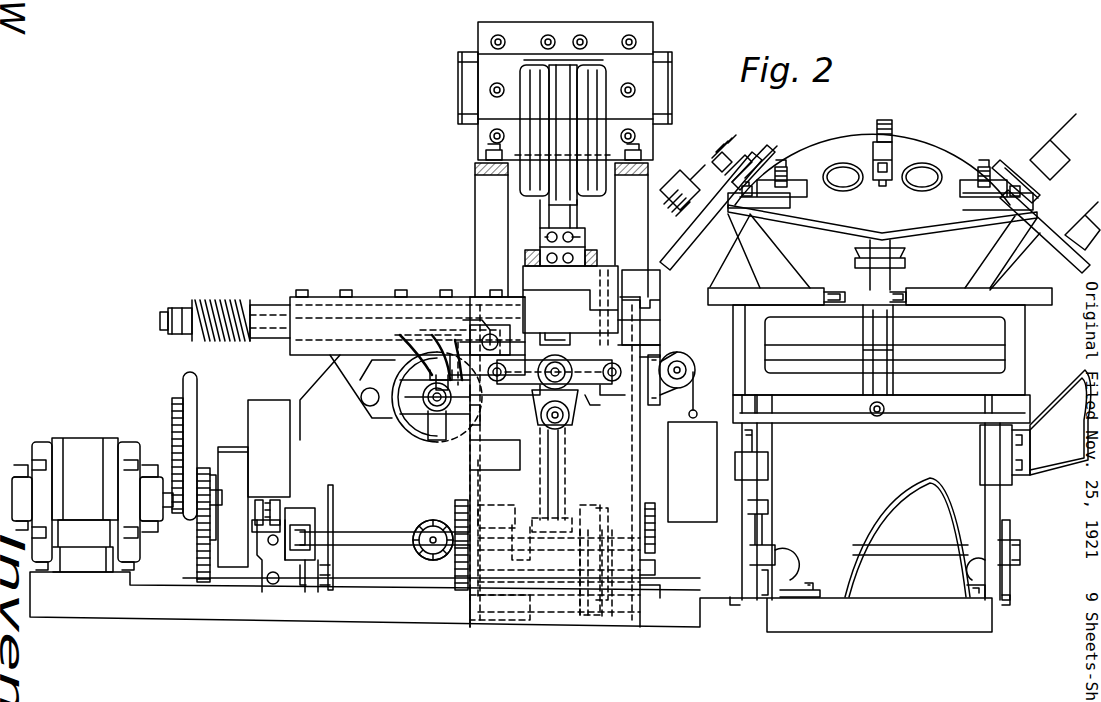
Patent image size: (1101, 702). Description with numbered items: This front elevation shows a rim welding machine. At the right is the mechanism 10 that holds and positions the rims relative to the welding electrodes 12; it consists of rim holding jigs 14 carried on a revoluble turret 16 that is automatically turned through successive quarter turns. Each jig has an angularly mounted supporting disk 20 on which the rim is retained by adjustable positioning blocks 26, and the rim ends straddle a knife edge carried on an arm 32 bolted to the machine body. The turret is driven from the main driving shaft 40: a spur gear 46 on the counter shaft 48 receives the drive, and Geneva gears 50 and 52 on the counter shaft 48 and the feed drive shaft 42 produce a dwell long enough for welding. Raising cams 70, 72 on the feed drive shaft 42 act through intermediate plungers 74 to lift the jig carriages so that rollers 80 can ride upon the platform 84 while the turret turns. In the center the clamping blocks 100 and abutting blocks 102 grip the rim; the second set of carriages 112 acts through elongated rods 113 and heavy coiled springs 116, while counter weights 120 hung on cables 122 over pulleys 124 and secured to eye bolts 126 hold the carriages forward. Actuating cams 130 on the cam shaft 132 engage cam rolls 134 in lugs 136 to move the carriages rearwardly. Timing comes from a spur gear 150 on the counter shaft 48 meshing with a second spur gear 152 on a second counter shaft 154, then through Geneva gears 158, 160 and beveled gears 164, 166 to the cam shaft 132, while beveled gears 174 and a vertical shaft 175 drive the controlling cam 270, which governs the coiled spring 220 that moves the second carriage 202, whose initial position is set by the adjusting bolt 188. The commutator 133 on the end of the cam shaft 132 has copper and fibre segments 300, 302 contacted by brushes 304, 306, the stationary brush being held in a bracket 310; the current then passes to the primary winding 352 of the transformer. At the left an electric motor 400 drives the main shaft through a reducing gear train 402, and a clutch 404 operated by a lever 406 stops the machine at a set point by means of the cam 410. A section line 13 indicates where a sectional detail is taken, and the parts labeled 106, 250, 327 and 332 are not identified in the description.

The rim holding and positioning mechanism 10 is at (924, 279).
The welding electrodes 12 is at (456, 258).
The section line 13— 13 is at (390, 423).
The rim holding jigs 14 is at (842, 146).
The revoluble turret 16 is at (915, 376).
The supporting disk 20 is at (844, 226).
The adjustable positioning blocks 26 is at (531, 560).
The arm 32 is at (1065, 398).
The main driving shaft 40 is at (380, 533).
The feed drive shaft 42 is at (897, 549).
The spur gear 46 is at (450, 582).
The counter shaft 48 is at (570, 546).
The Geneva gear 50 is at (656, 567).
The Geneva gear 52 is at (656, 588).
The raising cam 70 is at (738, 593).
The raising cam 72 is at (1008, 599).
The intermediate plungers 74 is at (764, 506).
The rollers 80 is at (770, 448).
The platform 84 is at (968, 427).
The clamping blocks 100 is at (666, 285).
The abutting blocks 102 is at (598, 259).
The arm 106 is at (664, 318).
The second set of carriages 112 is at (295, 330).
The elongated rods 113 is at (168, 320).
The heavy coiled springs 116 is at (213, 293).
The counter weights 120 is at (685, 511).
The cables 122 is at (720, 352).
The pulleys 124 is at (681, 351).
The eye bolts 126 is at (554, 366).
The actuating cams 130 is at (510, 432).
The cam shaft 132 is at (440, 425).
The commutator 133 is at (460, 335).
The cam rolls 134 is at (358, 410).
The lugs 136 is at (350, 403).
The spur gear 150 is at (588, 506).
The second spur gear 152 is at (577, 612).
The second counter shaft 154 is at (537, 578).
The Geneva gear 158 is at (598, 626).
The Geneva gear 160 is at (585, 520).
The beveled gears 164 is at (440, 552).
The beveled gears 166 is at (425, 528).
The beveled gears 174 is at (531, 514).
The vertical shaft 175 is at (560, 464).
The adjusting bolt 188 is at (570, 428).
The second carriage 202 is at (570, 305).
The coiled spring 220 is at (587, 380).
The cam 250 is at (441, 350).
The controlling cam 270 is at (607, 410).
The copper segment 300 is at (420, 420).
The fibre segment 302 is at (506, 400).
The brush 304 is at (470, 432).
The second brush 306 is at (407, 332).
The bracket 310 is at (460, 457).
The pin 327 is at (504, 351).
The screw 332 is at (562, 70).
The primary winding 352 is at (594, 113).
The electric motor 400 is at (95, 425).
The reducing gear train 402 is at (220, 446).
The clutch 404 is at (262, 580).
The lever 406 is at (344, 486).
The cam 410 is at (300, 560).